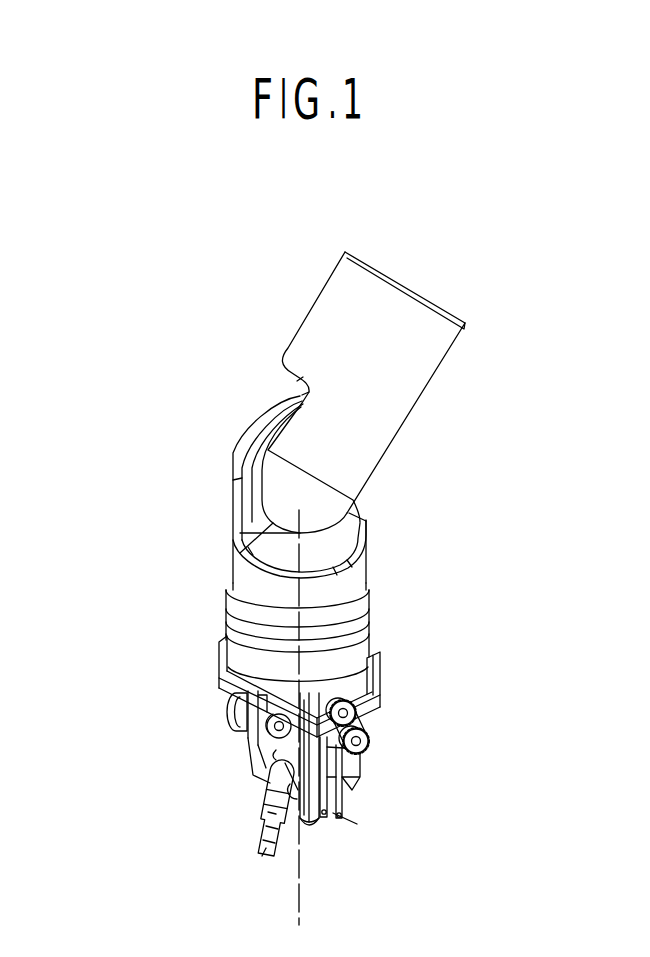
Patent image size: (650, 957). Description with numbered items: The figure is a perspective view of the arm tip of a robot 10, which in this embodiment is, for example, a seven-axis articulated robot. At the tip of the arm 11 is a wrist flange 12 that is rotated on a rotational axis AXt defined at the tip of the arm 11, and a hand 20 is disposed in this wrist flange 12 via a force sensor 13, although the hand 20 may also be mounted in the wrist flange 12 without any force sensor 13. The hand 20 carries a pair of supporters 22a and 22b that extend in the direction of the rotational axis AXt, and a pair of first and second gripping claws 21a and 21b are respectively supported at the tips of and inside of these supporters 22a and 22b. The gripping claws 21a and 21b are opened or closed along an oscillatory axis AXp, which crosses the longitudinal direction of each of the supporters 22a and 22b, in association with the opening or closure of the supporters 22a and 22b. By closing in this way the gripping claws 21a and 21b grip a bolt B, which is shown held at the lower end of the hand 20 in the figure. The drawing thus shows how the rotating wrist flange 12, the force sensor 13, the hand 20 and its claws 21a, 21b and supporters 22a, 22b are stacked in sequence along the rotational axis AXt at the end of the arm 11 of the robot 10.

The robot 10 is at (163, 260).
The arm 11 is at (368, 549).
The wrist flange 12 is at (357, 600).
The force sensor 13 is at (358, 653).
The hand 20 is at (163, 670).
The first gripping claw 21a is at (300, 826).
The second gripping claw 21b is at (257, 818).
The first supporter 22a is at (328, 790).
The second supporter 22b is at (262, 760).
The oscillatory axis AXp is at (374, 831).
The rotational axis AXt is at (302, 733).
The bolt B is at (265, 853).